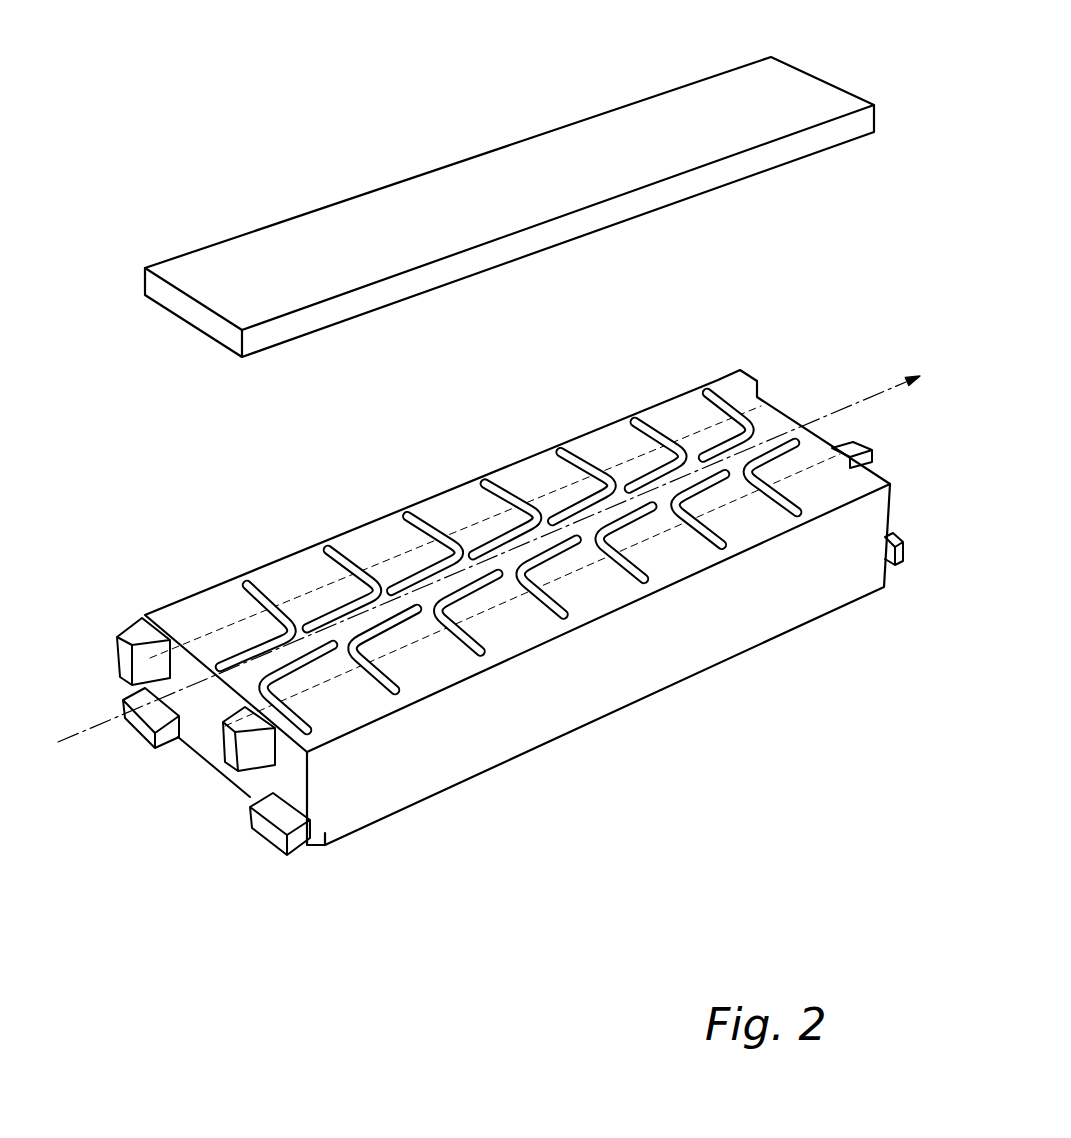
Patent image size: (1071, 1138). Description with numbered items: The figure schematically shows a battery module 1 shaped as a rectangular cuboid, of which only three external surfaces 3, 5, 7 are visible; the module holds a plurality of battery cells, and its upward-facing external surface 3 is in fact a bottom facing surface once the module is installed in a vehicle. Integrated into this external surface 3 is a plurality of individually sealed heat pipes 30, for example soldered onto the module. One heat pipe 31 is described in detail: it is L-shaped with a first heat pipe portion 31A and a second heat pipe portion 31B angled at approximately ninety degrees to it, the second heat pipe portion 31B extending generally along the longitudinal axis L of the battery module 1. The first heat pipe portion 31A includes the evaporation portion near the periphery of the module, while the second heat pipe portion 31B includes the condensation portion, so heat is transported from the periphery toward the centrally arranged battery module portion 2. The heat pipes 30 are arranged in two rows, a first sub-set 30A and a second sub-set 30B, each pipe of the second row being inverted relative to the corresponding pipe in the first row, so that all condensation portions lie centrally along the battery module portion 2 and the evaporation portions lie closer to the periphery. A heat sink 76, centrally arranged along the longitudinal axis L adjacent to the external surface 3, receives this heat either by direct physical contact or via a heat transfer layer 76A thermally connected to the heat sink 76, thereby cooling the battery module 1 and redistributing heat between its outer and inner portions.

The battery module 1 is at (703, 757).
The centrally arranged battery module portion 2 is at (767, 418).
The external surface 3 is at (617, 443).
The external surface 5 is at (532, 717).
The external surface 7 is at (266, 781).
The heat pipes 30 is at (795, 414).
The first sub-set of heat pipes 30A is at (822, 478).
The second sub-set of heat pipes 30B is at (221, 617).
The heat pipe 31 is at (257, 703).
The first heat pipe portion 31A is at (308, 722).
The second heat pipe portion 31B is at (323, 645).
The heat sink 76 is at (582, 164).
The heat transfer layer 76A is at (715, 177).
The longitudinal axis L is at (489, 541).